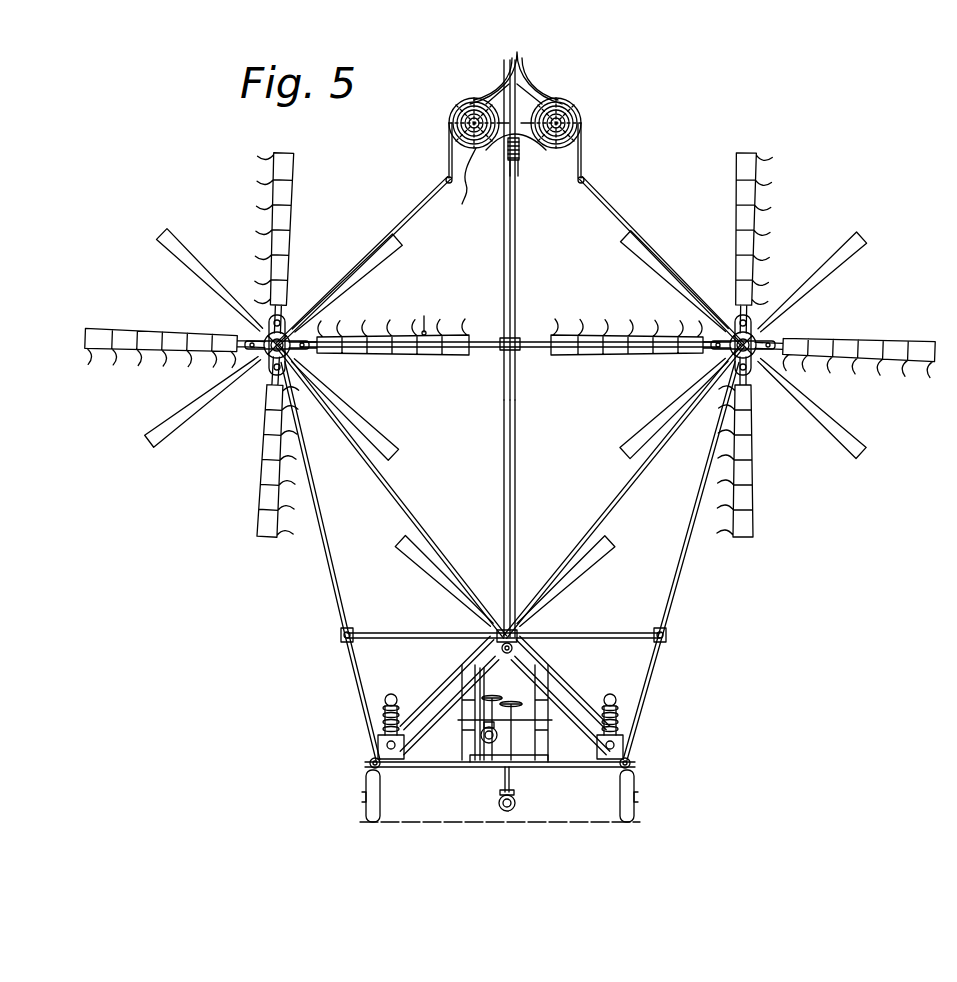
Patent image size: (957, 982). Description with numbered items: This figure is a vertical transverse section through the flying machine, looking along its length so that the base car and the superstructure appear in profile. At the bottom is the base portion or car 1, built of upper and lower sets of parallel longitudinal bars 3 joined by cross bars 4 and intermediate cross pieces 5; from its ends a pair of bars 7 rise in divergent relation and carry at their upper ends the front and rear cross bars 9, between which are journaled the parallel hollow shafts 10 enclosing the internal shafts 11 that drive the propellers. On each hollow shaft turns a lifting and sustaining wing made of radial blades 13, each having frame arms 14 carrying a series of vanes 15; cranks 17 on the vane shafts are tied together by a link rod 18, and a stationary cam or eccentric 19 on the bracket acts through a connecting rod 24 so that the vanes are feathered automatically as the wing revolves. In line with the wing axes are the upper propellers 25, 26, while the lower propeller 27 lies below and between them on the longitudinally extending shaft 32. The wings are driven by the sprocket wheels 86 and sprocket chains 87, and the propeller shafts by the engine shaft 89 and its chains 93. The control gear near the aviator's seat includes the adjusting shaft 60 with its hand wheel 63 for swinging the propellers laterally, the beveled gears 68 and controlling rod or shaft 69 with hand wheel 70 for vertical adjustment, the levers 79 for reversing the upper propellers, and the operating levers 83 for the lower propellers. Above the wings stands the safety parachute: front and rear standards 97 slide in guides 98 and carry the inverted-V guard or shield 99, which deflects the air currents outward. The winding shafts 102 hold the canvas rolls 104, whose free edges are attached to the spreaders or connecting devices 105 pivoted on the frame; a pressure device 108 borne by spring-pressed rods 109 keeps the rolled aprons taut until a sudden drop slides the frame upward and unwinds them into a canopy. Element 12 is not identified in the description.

The base portion or car 1 is at (424, 770).
The longitudinal bars 3 is at (368, 765).
The cross bars 4 is at (448, 771).
The intermediate cross pieces 5 is at (640, 637).
The bars 7 is at (346, 616).
The front and rear cross bars 9 is at (518, 346).
The hollow shafts 10 is at (300, 344).
The internal shafts 11 is at (268, 360).
The vane pivot 12 is at (423, 315).
The radial blades 13 is at (645, 354).
The frame arms 14 is at (170, 354).
The vanes 15 is at (395, 335).
The cranks 17 is at (112, 352).
The link rod 18 is at (166, 338).
The stationary cam or eccentric 19 is at (310, 347).
The connecting rod 24 is at (212, 354).
The upper propeller 25 is at (383, 438).
The upper propeller 26 is at (840, 438).
The lower propeller 27 is at (590, 574).
The longitudinally extending shaft 32 is at (520, 643).
The adjusting shaft 60 is at (490, 745).
The hand wheel 63 is at (484, 693).
The beveled gears 68 is at (518, 807).
The controlling rod or shaft 69 is at (516, 791).
The hand wheel 70 is at (503, 719).
The levers 79 is at (455, 665).
The operating levers 83 is at (448, 677).
The sprocket wheels 86 is at (628, 743).
The sprocket chains 87 is at (572, 541).
The shaft 89 is at (372, 743).
The chains 93 is at (432, 532).
The front and rear standards 97 is at (504, 332).
The guides 98 is at (505, 422).
The guard or shield 99 is at (510, 66).
The winding shafts 102 is at (449, 135).
The roll 104 is at (582, 136).
The spreaders or connecting devices 105 is at (385, 250).
The pressure device 108 is at (480, 182).
The spring-pressed rods 109 is at (520, 168).